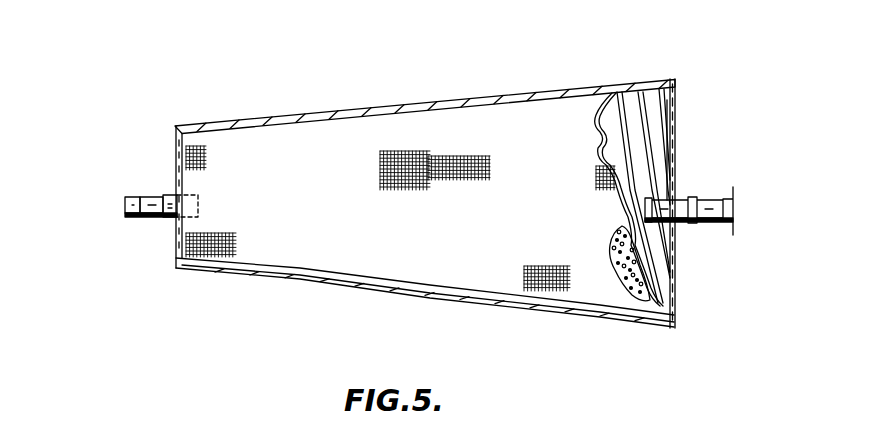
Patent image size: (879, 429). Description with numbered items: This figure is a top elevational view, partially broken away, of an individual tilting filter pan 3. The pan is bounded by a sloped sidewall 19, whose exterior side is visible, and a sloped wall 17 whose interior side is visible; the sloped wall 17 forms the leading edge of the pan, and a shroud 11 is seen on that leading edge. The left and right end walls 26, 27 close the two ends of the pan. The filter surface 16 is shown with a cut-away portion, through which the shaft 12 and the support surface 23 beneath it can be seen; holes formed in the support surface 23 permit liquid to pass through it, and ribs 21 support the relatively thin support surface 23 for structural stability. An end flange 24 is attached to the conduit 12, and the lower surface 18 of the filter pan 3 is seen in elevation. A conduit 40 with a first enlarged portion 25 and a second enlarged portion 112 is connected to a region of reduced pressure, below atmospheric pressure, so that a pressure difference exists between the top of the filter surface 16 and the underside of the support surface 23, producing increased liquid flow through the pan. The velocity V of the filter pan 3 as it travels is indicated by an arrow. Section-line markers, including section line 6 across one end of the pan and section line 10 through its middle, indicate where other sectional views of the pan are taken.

The filter pan 3 is at (685, 74).
The sloped sidewall 19 is at (242, 123).
The sloped wall 17 is at (259, 273).
The shroud 11 is at (305, 299).
The section line 6- 6 is at (107, 302).
The section line 10- 10 is at (483, 347).
The shaft 12 is at (100, 203).
The velocity V is at (388, 303).
The conduit 40 is at (125, 197).
The first enlarged portion 25 is at (153, 217).
The second enlarged portion 112 is at (163, 196).
The left end wall 26 is at (176, 160).
The filter surface 16 is at (338, 178).
The ribs 21 is at (618, 92).
The lower surface 18 is at (668, 152).
The right end wall 27 is at (674, 170).
The support surface 23 is at (618, 265).
The end flange 24 is at (735, 190).